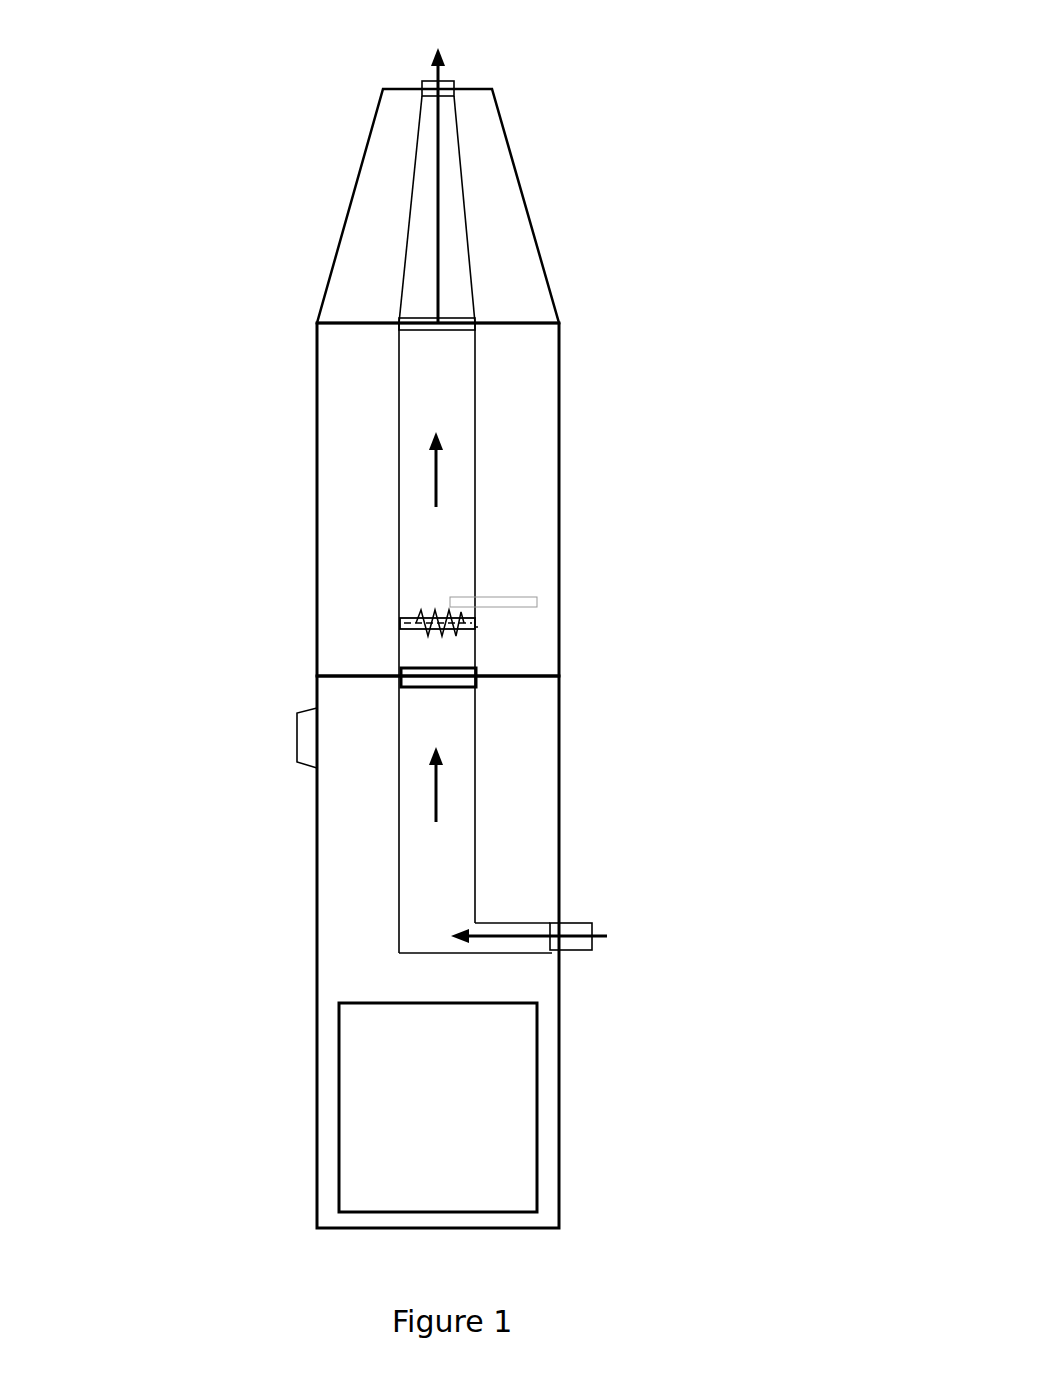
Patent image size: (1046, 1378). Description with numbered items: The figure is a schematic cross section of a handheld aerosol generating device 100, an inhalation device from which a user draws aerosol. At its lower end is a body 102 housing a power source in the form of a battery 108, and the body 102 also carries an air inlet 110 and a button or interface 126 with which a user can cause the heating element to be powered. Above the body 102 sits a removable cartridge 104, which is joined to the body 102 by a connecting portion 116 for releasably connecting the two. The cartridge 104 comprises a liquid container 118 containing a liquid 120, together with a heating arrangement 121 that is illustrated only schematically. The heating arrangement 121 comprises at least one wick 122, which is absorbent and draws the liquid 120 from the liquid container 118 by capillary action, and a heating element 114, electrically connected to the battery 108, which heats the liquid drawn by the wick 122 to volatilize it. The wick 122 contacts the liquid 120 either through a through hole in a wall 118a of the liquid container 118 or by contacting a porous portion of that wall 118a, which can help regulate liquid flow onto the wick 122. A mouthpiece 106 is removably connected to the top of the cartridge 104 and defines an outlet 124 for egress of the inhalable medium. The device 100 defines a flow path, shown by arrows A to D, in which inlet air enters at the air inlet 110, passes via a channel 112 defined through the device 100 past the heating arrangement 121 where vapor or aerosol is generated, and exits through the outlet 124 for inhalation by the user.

The aerosol generating device 100 is at (766, 144).
The body 102 is at (317, 890).
The cartridge 104 is at (317, 364).
The mouthpiece 106 is at (347, 203).
The battery 108 is at (537, 1130).
The air inlet 110 is at (560, 945).
The channel 112 is at (478, 890).
The heating element 114 is at (448, 612).
The connecting portion 116 is at (317, 676).
The liquid container 118 is at (317, 403).
The wall 118a is at (399, 627).
The liquid 120 is at (357, 465).
The heating arrangement 121 is at (480, 598).
The wick 122 is at (476, 627).
The outlet 124 is at (423, 88).
The button or interface 126 is at (297, 749).